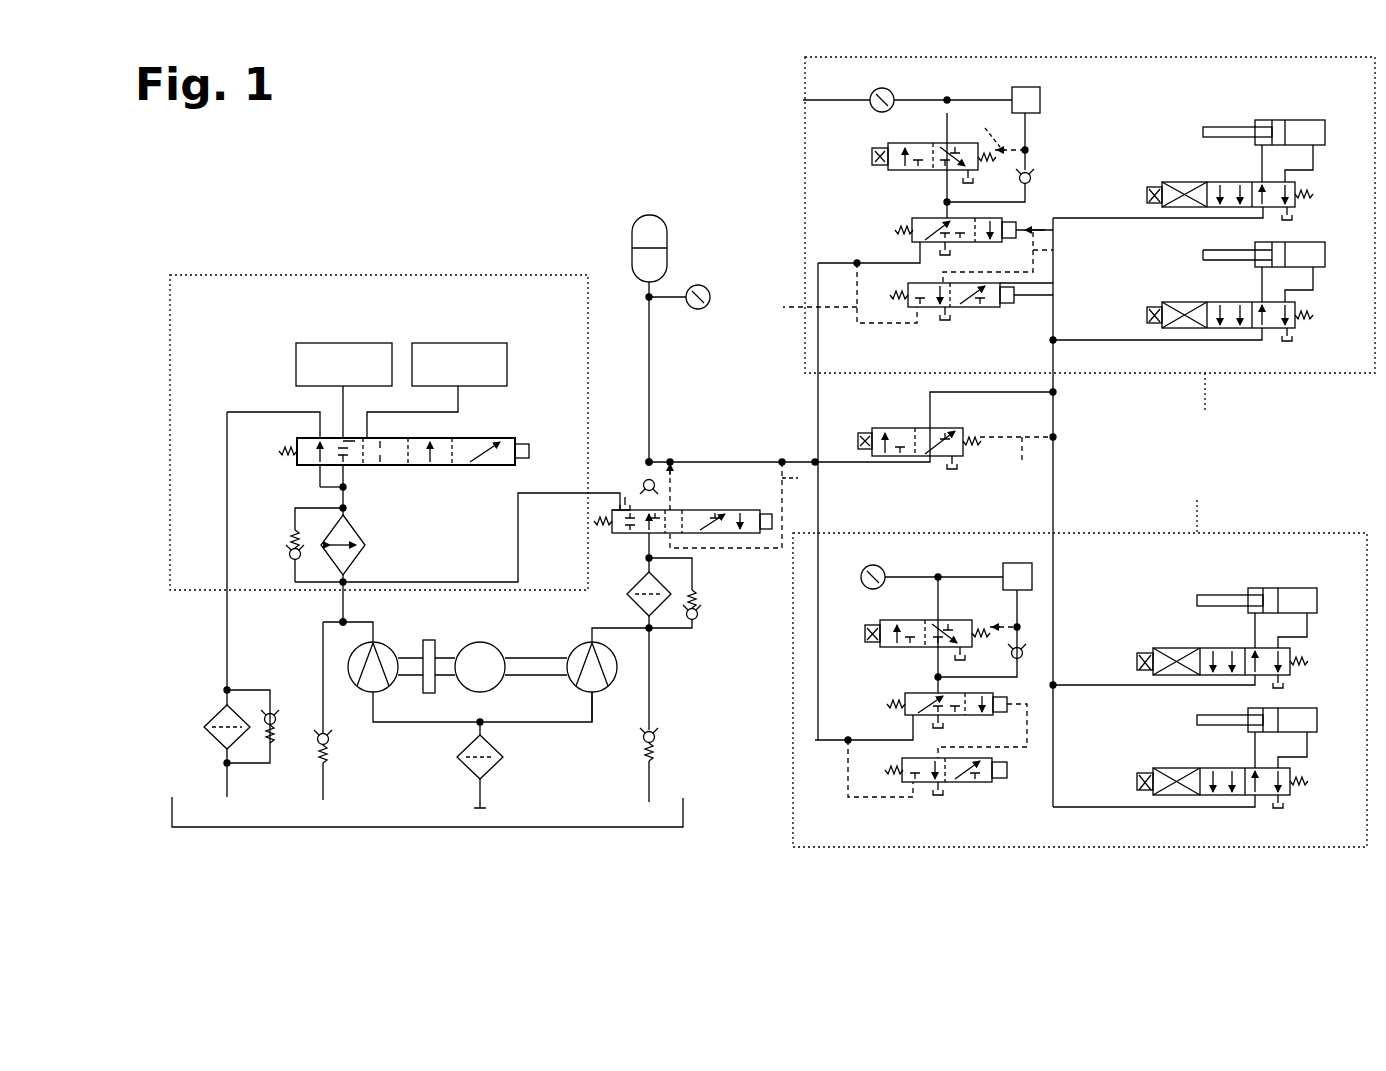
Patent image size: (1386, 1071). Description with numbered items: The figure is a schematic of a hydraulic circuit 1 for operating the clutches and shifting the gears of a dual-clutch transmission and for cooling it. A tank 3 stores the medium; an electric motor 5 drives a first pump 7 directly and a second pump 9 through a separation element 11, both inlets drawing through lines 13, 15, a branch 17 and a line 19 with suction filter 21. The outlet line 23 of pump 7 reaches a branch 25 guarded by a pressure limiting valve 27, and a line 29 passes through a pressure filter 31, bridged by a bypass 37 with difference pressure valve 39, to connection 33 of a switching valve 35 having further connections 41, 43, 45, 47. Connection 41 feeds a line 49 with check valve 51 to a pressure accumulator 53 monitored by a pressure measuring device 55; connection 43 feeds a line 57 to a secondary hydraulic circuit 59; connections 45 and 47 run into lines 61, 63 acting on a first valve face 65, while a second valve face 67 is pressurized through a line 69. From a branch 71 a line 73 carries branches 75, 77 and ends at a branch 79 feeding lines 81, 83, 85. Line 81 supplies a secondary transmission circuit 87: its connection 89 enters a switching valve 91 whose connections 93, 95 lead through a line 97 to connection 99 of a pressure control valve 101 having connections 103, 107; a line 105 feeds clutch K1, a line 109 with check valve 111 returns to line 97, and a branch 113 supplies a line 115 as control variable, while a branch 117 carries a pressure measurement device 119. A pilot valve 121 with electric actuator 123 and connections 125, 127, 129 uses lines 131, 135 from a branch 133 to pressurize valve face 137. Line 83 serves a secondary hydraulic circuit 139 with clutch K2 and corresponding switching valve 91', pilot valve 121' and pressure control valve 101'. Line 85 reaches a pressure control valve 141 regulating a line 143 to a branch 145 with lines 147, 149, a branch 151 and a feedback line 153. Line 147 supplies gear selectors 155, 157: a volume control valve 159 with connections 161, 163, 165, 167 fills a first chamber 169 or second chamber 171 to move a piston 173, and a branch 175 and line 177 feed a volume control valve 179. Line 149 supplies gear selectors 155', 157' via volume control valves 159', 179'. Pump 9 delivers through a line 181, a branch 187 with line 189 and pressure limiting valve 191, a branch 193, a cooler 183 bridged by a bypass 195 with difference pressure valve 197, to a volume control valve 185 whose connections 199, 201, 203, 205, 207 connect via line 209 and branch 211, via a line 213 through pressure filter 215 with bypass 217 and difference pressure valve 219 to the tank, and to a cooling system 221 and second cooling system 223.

The hydraulic circuit 1 is at (374, 180).
The tank 3 is at (683, 818).
The electric motor 5 is at (482, 645).
The first pump 7 is at (595, 692).
The second pump 9 is at (362, 690).
The separation element 11 is at (432, 640).
The line 13 is at (582, 722).
The line 15 is at (416, 722).
The branch 17 is at (482, 722).
The line 19 is at (486, 808).
The suction filter 21 is at (503, 760).
The line 23 is at (600, 628).
The branch 25 is at (652, 630).
The pressure limiting valve 27 is at (660, 746).
The line 29 is at (645, 556).
The pressure filter 31 is at (628, 590).
The connection 33 is at (642, 522).
The switching valve 35 is at (742, 505).
The bypass 37 is at (695, 628).
The difference pressure valve 39 is at (705, 598).
The connection 41 is at (640, 508).
The connection 43 is at (614, 508).
The connection 45 is at (688, 510).
The connection 47 is at (722, 535).
The line 49 is at (652, 368).
The check valve 51 is at (640, 478).
The pressure accumulator 53 is at (667, 240).
The pressure measuring device 55 is at (712, 290).
The line 57 is at (518, 560).
The secondary hydraulic circuit 59 is at (257, 275).
The line 61 is at (680, 476).
The line 63 is at (772, 552).
The first valve face 65 is at (774, 527).
The second valve face 67 is at (774, 520).
The line 69 is at (798, 478).
The branch 71 is at (650, 460).
The line 73 is at (736, 462).
The branch 75 is at (672, 462).
The branch 77 is at (782, 462).
The branch 79 is at (866, 440).
The line 81 is at (805, 355).
The line 83 is at (815, 553).
The line 85 is at (898, 458).
The secondary transmission circuit 87 is at (1209, 408).
The connection 89 is at (912, 236).
The switching valve 91 is at (984, 217).
The connection 93 is at (945, 212).
The connection 95 is at (950, 250).
The line 97 is at (945, 186).
The connection 99 is at (900, 172).
The pressure control valve 101 is at (801, 132).
The connection 103 is at (890, 140).
The line 105 is at (965, 98).
The connection 107 is at (1030, 168).
The line 109 is at (1028, 150).
The check valve 111 is at (1040, 178).
The branch 113 is at (1030, 130).
The line 115 is at (976, 125).
The branch 117 is at (883, 88).
The pressure measurement device 119 is at (820, 100).
The pilot valve 121 is at (967, 325).
The electric actuator 123 is at (1054, 296).
The connection 125 is at (918, 310).
The connection 127 is at (1054, 283).
The connection 129 is at (945, 320).
The line 131 is at (831, 293).
The branch 133 is at (818, 262).
The line 135 is at (1054, 253).
The valve face 137 is at (1054, 232).
The secondary hydraulic circuit 139 is at (1201, 505).
The pressure control valve 141 is at (895, 426).
The line 143 is at (985, 392).
The branch 145 is at (1056, 408).
The line 147 is at (1056, 392).
The line 149 is at (1056, 470).
The branch 151 is at (1056, 437).
The line 153 is at (1024, 460).
The gear selector 155 is at (1312, 112).
The gear selector 157 is at (1276, 276).
The volume control valve 159 is at (1209, 161).
The first connection 161 is at (1258, 218).
The second connection 163 is at (1258, 180).
The third connection 165 is at (1292, 180).
The fourth connection 167 is at (1294, 213).
The first chamber 169 is at (1255, 130).
The second chamber 171 is at (1300, 120).
The piston 173 is at (1272, 120).
The branch 175 is at (1088, 342).
The line 177 is at (1148, 342).
The volume control valve 179 is at (1219, 282).
The line 181 is at (348, 622).
The cooler 183 is at (360, 545).
The volume control valve 185 is at (520, 440).
The branch 187 is at (340, 622).
The line 189 is at (323, 657).
The pressure limiting valve 191 is at (330, 760).
The branch 193 is at (346, 582).
The bypass 195 is at (300, 577).
The difference pressure valve 197 is at (280, 542).
The connection 199 is at (346, 472).
The connection 201 is at (318, 472).
The connection 203 is at (300, 443).
The connection 205 is at (348, 430).
The connection 207 is at (372, 438).
The line 209 is at (320, 490).
The branch 211 is at (346, 508).
The line 213 is at (227, 468).
The pressure filter 215 is at (205, 720).
The bypass 217 is at (227, 690).
The difference pressure valve 219 is at (275, 745).
The cooling system 221 is at (343, 343).
The second cooling system 223 is at (458, 343).
The pressure control valve 101' is at (920, 654).
The switching valve 91' is at (988, 725).
The pilot valve 121' is at (944, 791).
The gear selector 155' is at (1275, 623).
The gear selector 157' is at (1275, 741).
The volume control valve 159' is at (1180, 635).
The volume control valve 179' is at (1180, 756).
The clutch K1 is at (1027, 100).
The clutch K2 is at (1018, 576).